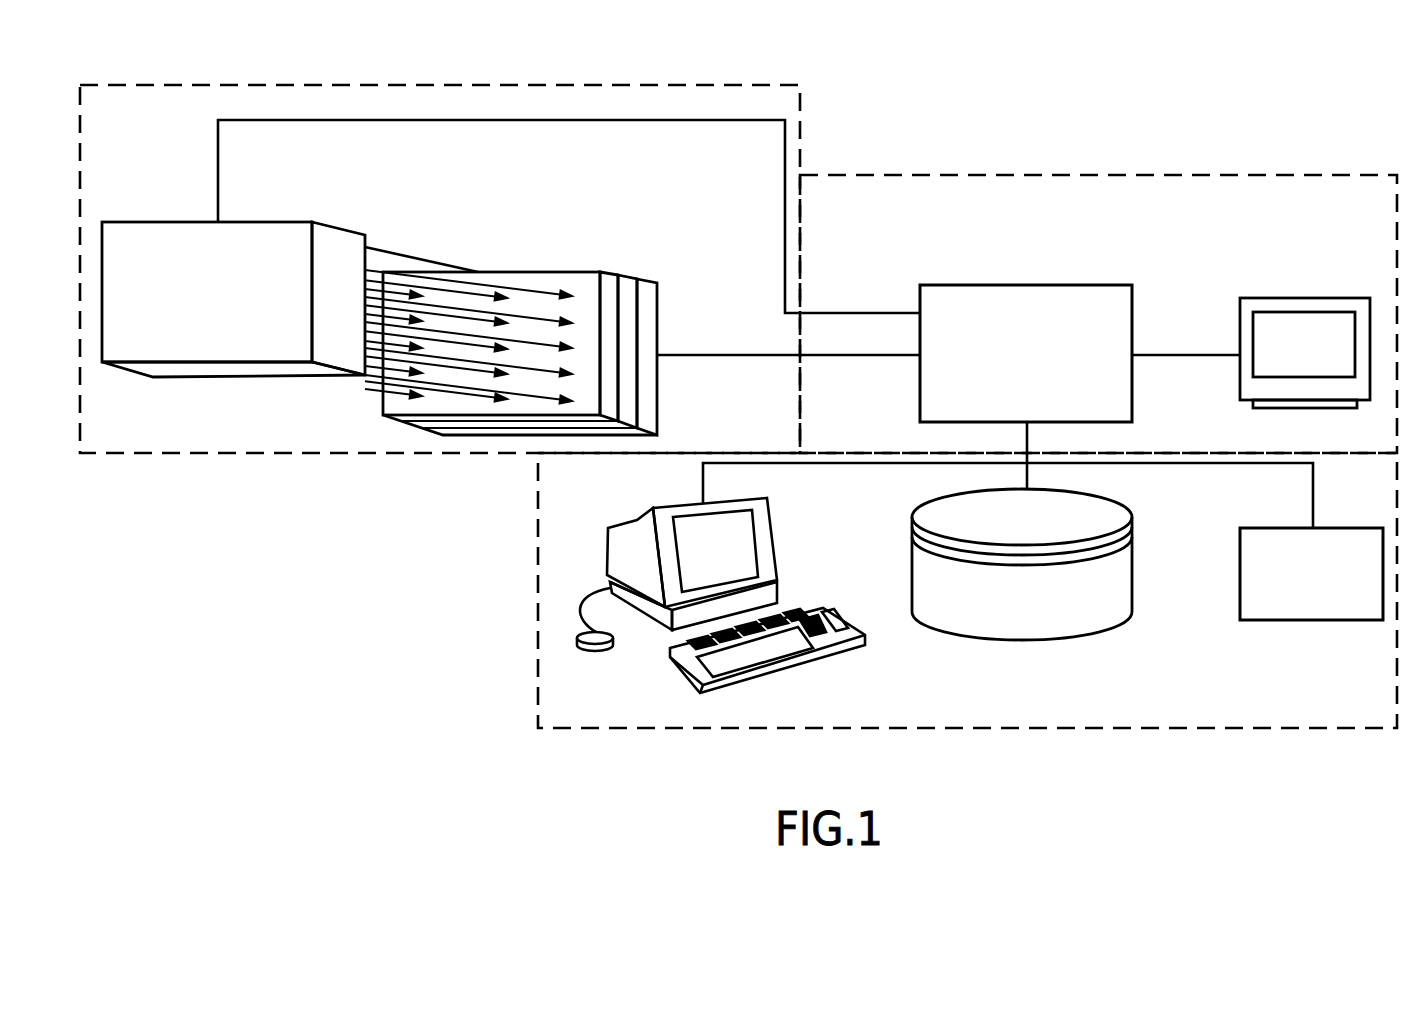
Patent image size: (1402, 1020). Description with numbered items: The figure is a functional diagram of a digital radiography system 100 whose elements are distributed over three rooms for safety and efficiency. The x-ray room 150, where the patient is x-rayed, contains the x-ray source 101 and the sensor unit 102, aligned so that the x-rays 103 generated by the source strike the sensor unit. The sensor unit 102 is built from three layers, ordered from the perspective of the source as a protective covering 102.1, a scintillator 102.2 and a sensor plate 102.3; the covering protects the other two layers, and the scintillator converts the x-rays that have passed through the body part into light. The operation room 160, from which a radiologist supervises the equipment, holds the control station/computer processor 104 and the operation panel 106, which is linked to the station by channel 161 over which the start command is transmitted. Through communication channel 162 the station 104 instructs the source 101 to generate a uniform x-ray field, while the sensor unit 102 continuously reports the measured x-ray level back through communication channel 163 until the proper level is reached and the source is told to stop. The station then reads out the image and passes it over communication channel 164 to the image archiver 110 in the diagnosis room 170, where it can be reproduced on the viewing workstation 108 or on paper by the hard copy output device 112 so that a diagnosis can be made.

The digital radiography system 100 is at (640, 783).
The x-ray source 101 is at (283, 221).
The sensor unit 102 is at (565, 308).
The protective covering 102.1 is at (608, 275).
The scintillator 102.2 is at (629, 279).
The sensor plate 102.3 is at (648, 283).
The x-rays 103 is at (425, 261).
The control station/computer processor 104 is at (1010, 285).
The operation panel 106 is at (1313, 298).
The viewing workstation 108 is at (778, 528).
The image archiver 110 is at (1051, 564).
The hard copy output device 112 is at (1313, 621).
The x-ray room 150 is at (633, 179).
The operation room 160 is at (1330, 228).
The channel 161 is at (1150, 355).
The communication channel 162 is at (826, 313).
The communication channel 163 is at (880, 358).
The communication channel 164 is at (1033, 472).
The diagnosis room 170 is at (1222, 712).